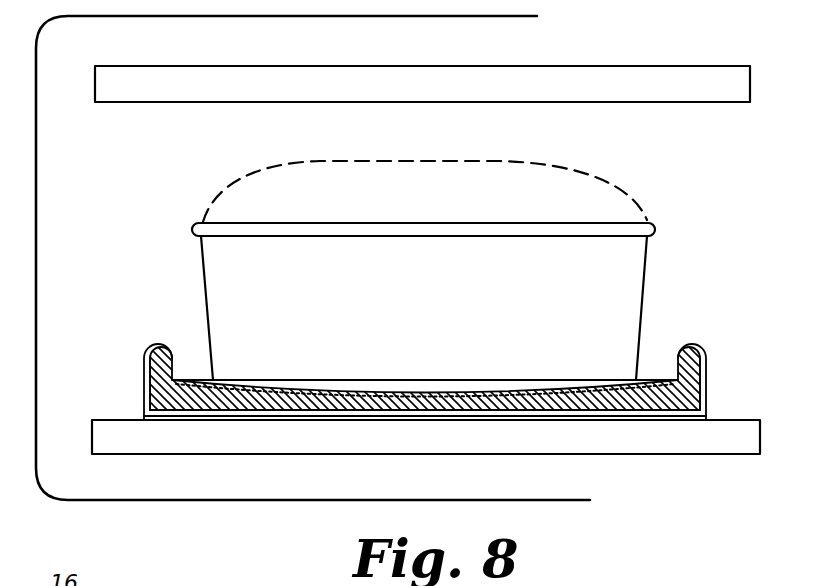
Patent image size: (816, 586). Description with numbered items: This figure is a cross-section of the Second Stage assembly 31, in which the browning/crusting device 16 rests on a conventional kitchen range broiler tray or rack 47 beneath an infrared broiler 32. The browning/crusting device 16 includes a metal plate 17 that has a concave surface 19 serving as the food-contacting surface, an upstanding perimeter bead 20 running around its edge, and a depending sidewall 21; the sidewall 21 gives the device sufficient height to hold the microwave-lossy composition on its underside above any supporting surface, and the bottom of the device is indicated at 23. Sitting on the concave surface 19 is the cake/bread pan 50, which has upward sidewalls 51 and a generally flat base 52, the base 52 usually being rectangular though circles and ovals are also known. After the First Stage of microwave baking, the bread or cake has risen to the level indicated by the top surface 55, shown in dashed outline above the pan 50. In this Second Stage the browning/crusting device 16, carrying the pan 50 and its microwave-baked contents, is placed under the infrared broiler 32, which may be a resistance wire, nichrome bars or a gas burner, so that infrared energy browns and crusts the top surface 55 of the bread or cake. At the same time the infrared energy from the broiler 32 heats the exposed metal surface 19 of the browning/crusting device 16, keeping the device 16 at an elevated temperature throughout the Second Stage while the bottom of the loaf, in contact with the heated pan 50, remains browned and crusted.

The browning/crusting device 16 is at (417, 408).
The metal plate 17 is at (656, 378).
The concave surface 19 is at (408, 380).
The upstanding perimeter bead 20 is at (144, 346).
The depending sidewall 21 is at (144, 390).
The tray bottom 23 is at (591, 410).
The Second Stage assembly 31 is at (178, 198).
The infrared broiler 32 is at (683, 65).
The broiler tray or rack 47 is at (673, 448).
The cake/bread pan 50 is at (408, 302).
The upward sidewalls 51 is at (203, 283).
The flat base 52 is at (352, 381).
The top surface of the bread/cake 55 is at (495, 162).